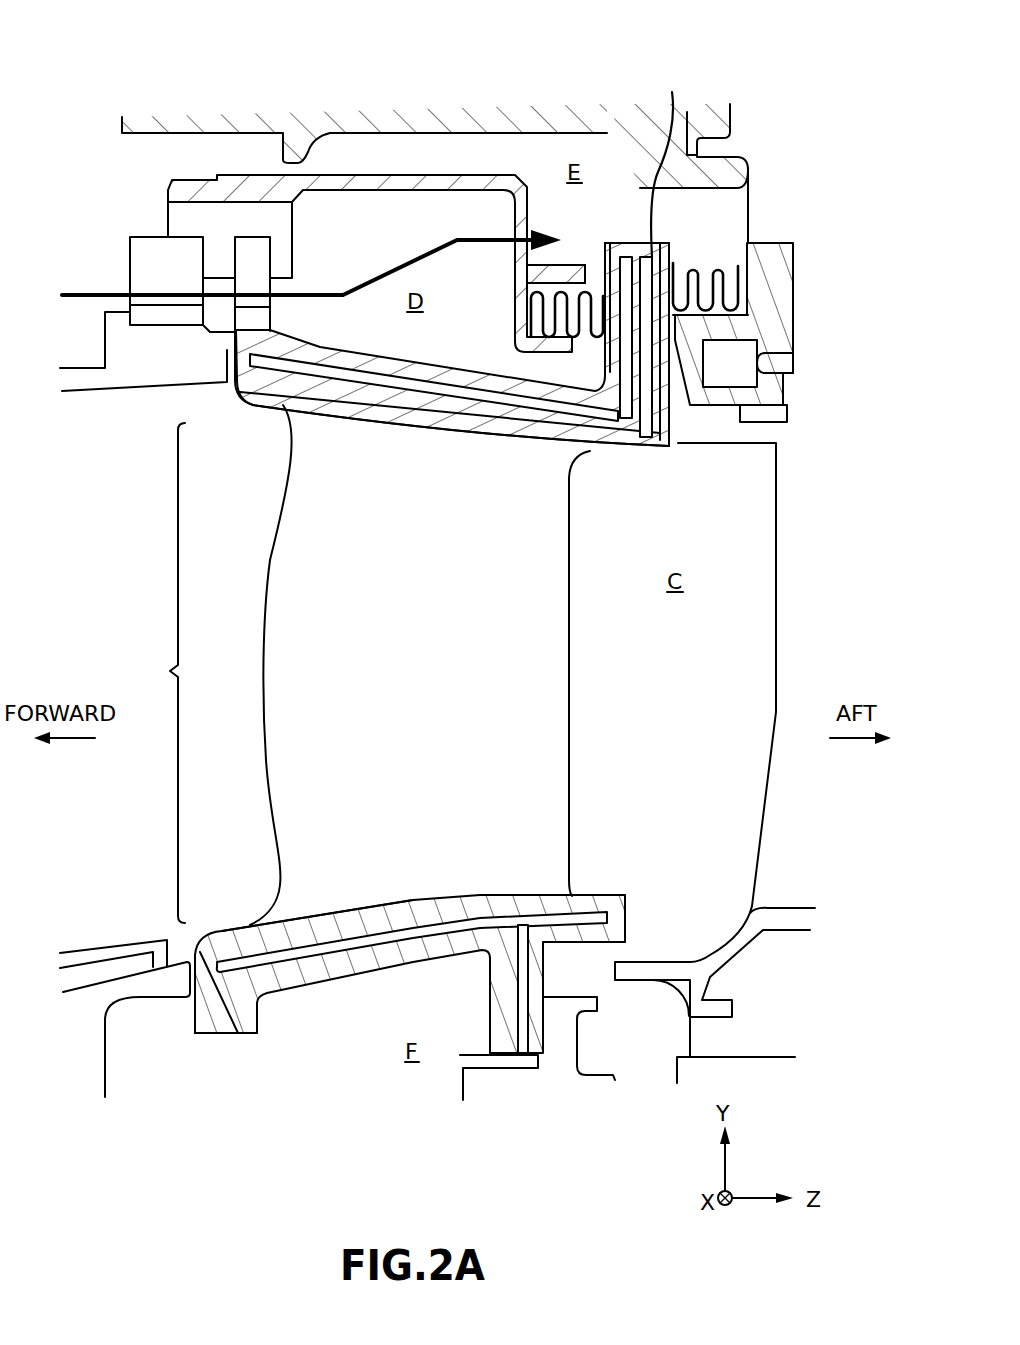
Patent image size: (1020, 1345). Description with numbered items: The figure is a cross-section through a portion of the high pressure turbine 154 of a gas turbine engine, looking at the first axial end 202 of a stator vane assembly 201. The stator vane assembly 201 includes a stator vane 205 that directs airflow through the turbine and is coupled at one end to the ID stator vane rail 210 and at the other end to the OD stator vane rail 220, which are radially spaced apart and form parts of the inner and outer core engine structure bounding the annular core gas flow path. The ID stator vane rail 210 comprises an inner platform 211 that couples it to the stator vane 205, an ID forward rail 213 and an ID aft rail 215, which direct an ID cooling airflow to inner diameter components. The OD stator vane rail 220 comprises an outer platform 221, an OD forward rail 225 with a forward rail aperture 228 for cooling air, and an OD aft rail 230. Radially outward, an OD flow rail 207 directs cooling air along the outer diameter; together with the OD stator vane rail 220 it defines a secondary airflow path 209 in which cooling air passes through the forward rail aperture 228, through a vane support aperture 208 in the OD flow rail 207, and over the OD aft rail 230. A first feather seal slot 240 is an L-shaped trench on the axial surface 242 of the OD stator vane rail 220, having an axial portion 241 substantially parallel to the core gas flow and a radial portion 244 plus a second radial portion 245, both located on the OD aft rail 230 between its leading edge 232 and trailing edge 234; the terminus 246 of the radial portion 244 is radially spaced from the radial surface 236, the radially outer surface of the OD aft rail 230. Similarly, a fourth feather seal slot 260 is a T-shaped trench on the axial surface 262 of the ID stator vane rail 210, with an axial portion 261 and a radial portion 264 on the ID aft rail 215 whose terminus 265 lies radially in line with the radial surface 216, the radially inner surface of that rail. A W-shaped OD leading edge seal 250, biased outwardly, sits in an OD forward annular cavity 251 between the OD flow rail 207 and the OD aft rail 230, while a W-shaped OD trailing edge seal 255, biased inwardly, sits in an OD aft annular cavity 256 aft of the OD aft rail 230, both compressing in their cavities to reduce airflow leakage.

The high pressure turbine 154 is at (108, 62).
The stator vane assembly 201 is at (170, 670).
The first axial end 202 is at (371, 1072).
The stator vane 205 is at (540, 690).
The OD flow rail 207 is at (377, 183).
The vane support aperture 208 is at (517, 225).
The secondary airflow path 209 is at (72, 294).
The ID stator vane rail 210 is at (219, 905).
The inner platform 211 is at (571, 900).
The ID forward rail 213 is at (252, 1025).
The ID aft rail 215 is at (497, 1013).
The radial surface 216 is at (493, 1068).
The OD stator vane rail 220 is at (247, 432).
The outer platform 221 is at (588, 440).
The OD forward rail 225 is at (253, 314).
The forward rail aperture 228 is at (265, 303).
The OD aft rail 230 is at (663, 338).
The leading edge 232 is at (603, 258).
The trailing edge 234 is at (672, 255).
The radial surface 236 is at (640, 243).
The feather seal slot 240 is at (503, 407).
The axial portion 241 is at (413, 392).
The axial surface 242 is at (343, 400).
The radial portion 244 is at (648, 350).
The second radial portion 245 is at (630, 373).
The terminus 246 is at (669, 158).
The OD leading edge seal 250 is at (528, 292).
The OD forward annular cavity 251 is at (563, 312).
The OD trailing edge seal 255 is at (722, 268).
The OD aft annular cavity 256 is at (725, 288).
The feather seal slot 260 is at (413, 923).
The axial portion 261 is at (332, 943).
The axial surface 262 is at (487, 900).
The radial portion 264 is at (527, 1030).
The terminus 265 is at (527, 1070).